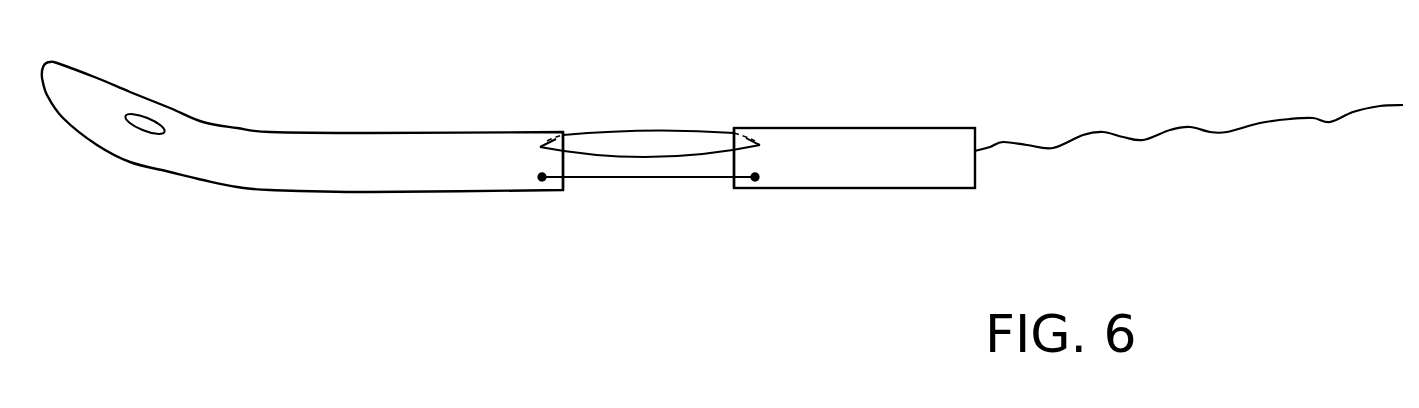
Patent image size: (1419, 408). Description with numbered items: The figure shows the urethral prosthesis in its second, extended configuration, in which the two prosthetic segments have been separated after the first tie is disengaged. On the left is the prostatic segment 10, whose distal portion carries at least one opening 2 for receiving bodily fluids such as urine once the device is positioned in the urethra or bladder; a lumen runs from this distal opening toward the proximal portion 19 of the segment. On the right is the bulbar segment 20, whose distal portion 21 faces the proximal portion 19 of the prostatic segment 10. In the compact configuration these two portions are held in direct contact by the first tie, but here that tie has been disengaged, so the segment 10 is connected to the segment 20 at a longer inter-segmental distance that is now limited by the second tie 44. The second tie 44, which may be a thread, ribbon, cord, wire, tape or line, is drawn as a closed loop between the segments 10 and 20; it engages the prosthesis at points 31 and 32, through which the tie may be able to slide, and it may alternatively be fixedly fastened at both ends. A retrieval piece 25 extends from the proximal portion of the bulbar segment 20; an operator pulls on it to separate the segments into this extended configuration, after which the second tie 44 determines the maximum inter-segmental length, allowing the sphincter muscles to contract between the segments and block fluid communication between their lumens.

The opening 2 is at (146, 122).
The prostatic segment 10 is at (221, 173).
The proximal portion 19 is at (457, 142).
The bulbar segment 20 is at (880, 170).
The distal portion 21 is at (780, 133).
The retrieval piece 25 is at (1227, 132).
The point 31 is at (540, 147).
The point 32 is at (758, 144).
The second tie 44 is at (640, 130).